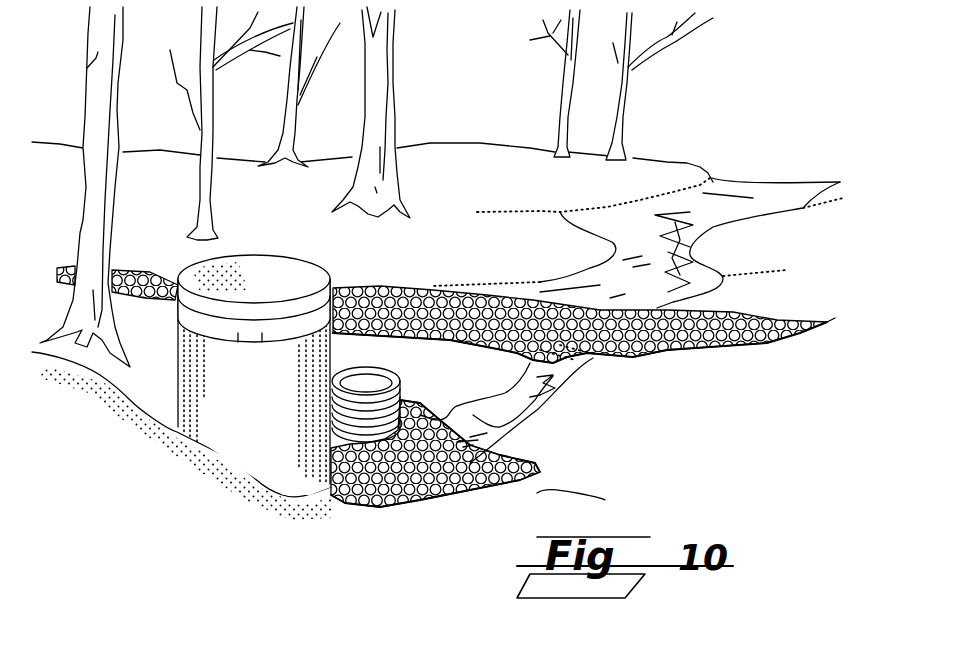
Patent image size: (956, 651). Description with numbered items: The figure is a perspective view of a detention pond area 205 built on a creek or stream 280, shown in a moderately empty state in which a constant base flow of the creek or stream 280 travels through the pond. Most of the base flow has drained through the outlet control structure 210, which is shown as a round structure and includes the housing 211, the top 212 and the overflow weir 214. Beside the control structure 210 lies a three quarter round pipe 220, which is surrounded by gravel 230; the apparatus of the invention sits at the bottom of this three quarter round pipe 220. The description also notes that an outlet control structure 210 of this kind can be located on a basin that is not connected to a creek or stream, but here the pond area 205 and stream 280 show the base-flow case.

The detention pond area 205 is at (683, 392).
The outlet control structure 210 is at (286, 400).
The housing 211 is at (236, 419).
The top 212 is at (274, 302).
The overflow weir 214 is at (305, 330).
The three quarter round pipe 220 is at (380, 368).
The gravel 230 is at (430, 497).
The creek or stream 280 is at (507, 418).